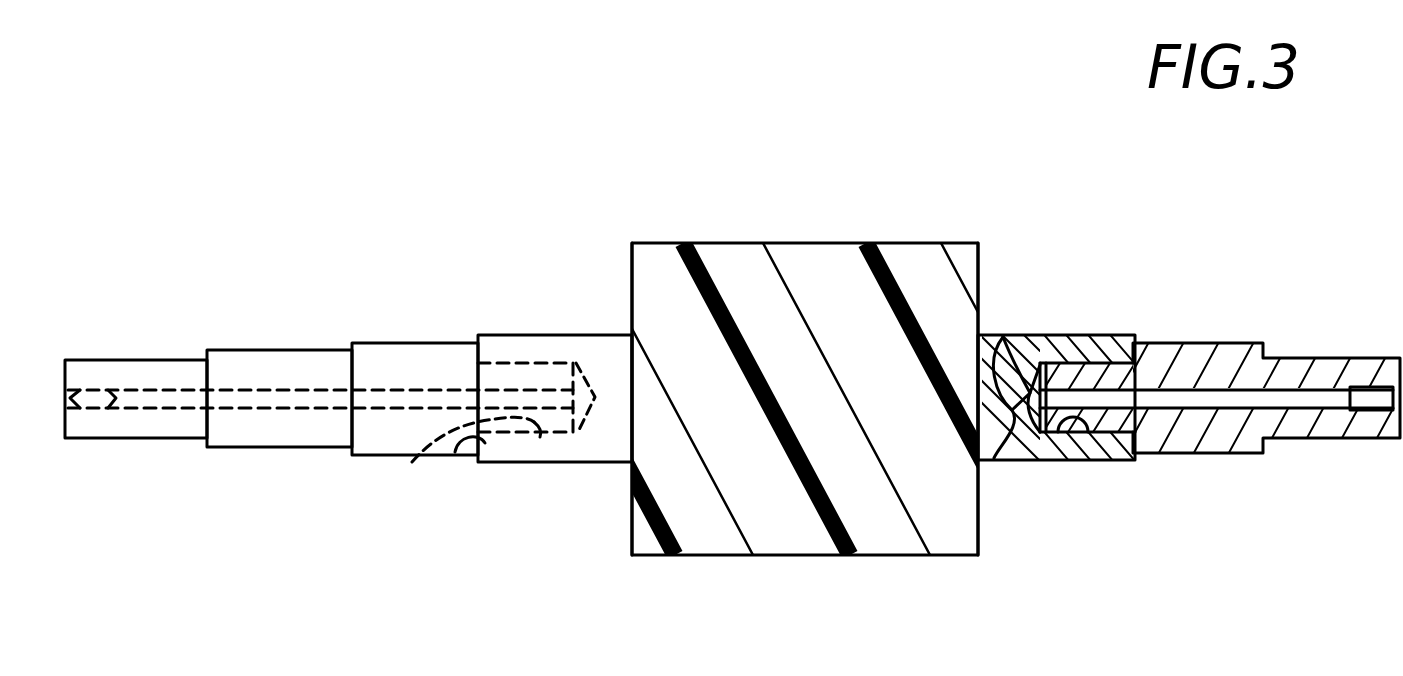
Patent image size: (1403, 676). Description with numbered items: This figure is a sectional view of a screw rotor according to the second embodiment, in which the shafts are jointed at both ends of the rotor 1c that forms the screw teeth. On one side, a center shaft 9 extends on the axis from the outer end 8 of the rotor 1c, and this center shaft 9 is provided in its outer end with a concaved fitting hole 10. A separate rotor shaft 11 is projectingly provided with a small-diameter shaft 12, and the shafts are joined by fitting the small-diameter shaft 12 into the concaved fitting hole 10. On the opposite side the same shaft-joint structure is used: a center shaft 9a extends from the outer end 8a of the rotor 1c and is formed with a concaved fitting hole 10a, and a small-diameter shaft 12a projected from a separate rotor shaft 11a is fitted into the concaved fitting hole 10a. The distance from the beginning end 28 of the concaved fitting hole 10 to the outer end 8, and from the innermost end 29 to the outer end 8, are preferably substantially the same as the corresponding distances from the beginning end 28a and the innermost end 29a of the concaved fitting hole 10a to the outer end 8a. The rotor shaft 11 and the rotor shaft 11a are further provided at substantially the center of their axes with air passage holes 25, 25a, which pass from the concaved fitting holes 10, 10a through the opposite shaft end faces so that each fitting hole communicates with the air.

The rotor 1c is at (707, 242).
The outer end 8 is at (980, 520).
The outer end 8a is at (632, 523).
The center shaft 9 is at (1000, 335).
The center shaft 9a is at (594, 335).
The concaved fitting hole 10 is at (1058, 432).
The concaved fitting hole 10a is at (412, 462).
The separate rotor shaft 11 is at (1193, 343).
The separate rotor shaft 11a is at (397, 343).
The small-diameter shaft 12 is at (1090, 355).
The small-diameter shaft 12a is at (520, 362).
The air passage hole 25 is at (1306, 388).
The air passage hole 25a is at (163, 387).
The beginning end 28 is at (1147, 357).
The beginning end 28a is at (455, 452).
The innermost end 29 is at (1065, 363).
The innermost end 29a is at (587, 432).